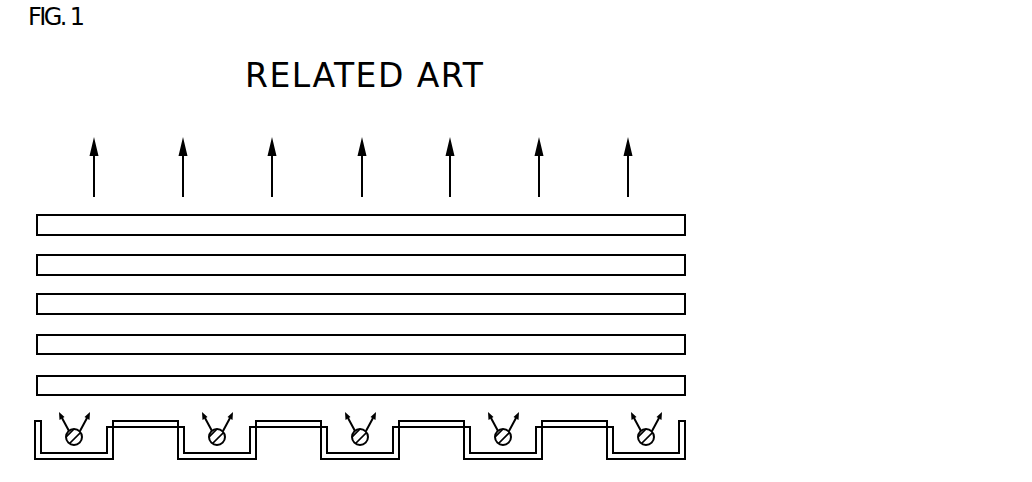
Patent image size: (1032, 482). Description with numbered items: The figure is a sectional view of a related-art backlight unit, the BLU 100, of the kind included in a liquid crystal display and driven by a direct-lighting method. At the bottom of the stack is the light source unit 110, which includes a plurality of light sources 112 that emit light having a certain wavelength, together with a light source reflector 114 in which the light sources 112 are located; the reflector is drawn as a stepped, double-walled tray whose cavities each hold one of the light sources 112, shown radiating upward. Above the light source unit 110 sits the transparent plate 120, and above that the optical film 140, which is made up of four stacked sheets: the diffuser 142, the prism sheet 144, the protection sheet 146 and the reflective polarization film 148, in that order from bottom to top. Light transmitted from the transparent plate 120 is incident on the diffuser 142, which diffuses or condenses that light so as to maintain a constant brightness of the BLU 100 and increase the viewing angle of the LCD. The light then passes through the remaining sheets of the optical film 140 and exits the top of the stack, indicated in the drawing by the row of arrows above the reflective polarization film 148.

The BLU 100 is at (674, 199).
The light source unit 110 is at (845, 415).
The light sources 112 is at (654, 433).
The light source reflector 114 is at (682, 445).
The transparent plate 120 is at (674, 387).
The optical film 140 is at (847, 353).
The diffuser 142 is at (674, 348).
The prism sheet 144 is at (674, 309).
The protection sheet 146 is at (674, 269).
The reflective polarization film 148 is at (674, 229).